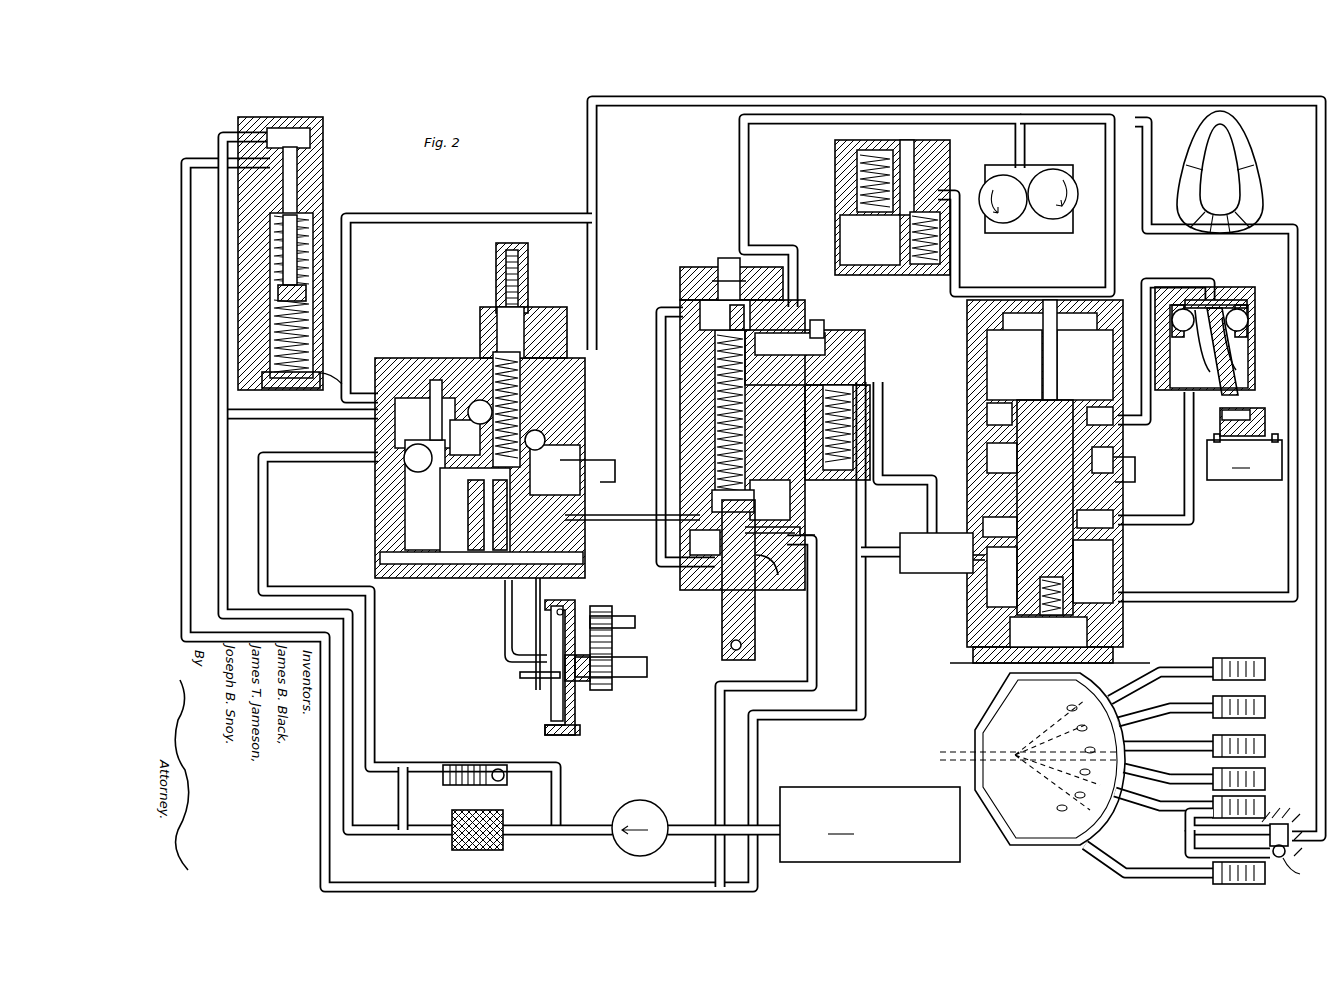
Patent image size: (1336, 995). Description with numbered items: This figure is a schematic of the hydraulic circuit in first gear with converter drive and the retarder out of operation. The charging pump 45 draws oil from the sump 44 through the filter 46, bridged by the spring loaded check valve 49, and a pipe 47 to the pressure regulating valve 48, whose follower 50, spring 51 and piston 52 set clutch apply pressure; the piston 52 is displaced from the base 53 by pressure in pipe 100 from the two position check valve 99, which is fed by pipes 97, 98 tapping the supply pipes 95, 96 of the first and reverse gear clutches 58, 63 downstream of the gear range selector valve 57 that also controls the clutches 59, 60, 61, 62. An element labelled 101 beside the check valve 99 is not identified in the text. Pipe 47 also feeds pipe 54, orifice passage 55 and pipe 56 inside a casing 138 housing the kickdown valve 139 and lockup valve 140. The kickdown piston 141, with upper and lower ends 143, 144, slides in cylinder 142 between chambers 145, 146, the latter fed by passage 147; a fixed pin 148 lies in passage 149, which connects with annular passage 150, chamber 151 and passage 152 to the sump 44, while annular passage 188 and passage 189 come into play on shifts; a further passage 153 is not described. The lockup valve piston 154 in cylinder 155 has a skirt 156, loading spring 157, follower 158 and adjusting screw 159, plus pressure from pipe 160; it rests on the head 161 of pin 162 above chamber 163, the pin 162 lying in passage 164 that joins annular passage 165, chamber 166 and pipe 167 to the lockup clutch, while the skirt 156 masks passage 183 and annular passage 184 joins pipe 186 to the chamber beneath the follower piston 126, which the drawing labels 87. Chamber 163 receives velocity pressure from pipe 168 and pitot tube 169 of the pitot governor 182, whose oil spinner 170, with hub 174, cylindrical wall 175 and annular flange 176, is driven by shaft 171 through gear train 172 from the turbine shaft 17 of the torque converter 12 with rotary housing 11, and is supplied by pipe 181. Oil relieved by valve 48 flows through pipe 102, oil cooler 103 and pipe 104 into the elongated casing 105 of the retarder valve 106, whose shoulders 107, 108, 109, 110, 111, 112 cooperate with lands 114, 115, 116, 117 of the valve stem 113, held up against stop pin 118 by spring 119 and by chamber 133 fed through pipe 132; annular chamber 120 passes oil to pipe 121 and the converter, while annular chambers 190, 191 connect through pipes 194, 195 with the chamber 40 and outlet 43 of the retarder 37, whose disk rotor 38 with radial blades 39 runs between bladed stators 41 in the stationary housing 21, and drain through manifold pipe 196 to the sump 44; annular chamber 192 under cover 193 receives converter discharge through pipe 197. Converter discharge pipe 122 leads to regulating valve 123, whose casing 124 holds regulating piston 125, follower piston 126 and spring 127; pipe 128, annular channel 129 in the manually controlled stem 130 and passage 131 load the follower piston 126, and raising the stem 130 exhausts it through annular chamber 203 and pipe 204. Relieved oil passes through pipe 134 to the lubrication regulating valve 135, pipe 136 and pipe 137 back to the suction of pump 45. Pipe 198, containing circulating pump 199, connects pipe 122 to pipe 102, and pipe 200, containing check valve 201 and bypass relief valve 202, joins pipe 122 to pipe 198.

The rotary housing 11 is at (491, 695).
The hydraulic torque converter 12 is at (1252, 155).
The turbine shaft 17 is at (635, 618).
The stationary housing 21 is at (1243, 402).
The retarder 37 is at (1232, 287).
The disk rotor 38 is at (1238, 380).
The radial blades 39 is at (1222, 358).
The chamber 40 is at (1193, 386).
The bladed stators 41 is at (1246, 316).
The outlet 43 is at (1236, 298).
The sump 44 is at (818, 530).
The charging pump 45 is at (650, 806).
The filter 46 is at (495, 850).
The pipe 47 is at (263, 510).
The pressure regulating valve 48 is at (310, 186).
The spring loaded check valve 49 is at (500, 782).
The follower 50 is at (283, 258).
The spring 51 is at (278, 302).
The piston 52 is at (262, 384).
The base 53 is at (320, 374).
The pipe 54 is at (285, 419).
The orifice passage 55 is at (372, 428).
The pipe 56 is at (232, 232).
The selector valve 57 is at (975, 735).
The first gear clutch 58 is at (1268, 806).
The second gear clutch 59 is at (1268, 779).
The third gear clutch 60 is at (1268, 745).
The fourth gear clutch 61 is at (1268, 704).
The fifth gear clutch 62 is at (1268, 664).
The reverse gear clutch 63 is at (1210, 880).
The valve 87 is at (733, 501).
The supply pipe 95 is at (1130, 808).
The supply pipe 96 is at (1100, 862).
The pipe 97 is at (1182, 828).
The pipe 98 is at (1183, 853).
The check valve 99 is at (1300, 872).
The pipe 100 is at (440, 212).
The relief valve 101 is at (1288, 853).
The pipe 102 is at (190, 156).
The oil cooler 103 is at (914, 574).
The pipe 104 is at (968, 574).
The elongated casing 105 is at (1120, 660).
The retarder valve 106 is at (1142, 556).
The annular shoulder 107 is at (1112, 618).
The annular shoulder 108 is at (1120, 574).
The annular shoulder 109 is at (1115, 538).
The annular shoulder 110 is at (1122, 503).
The annular shoulder 111 is at (1114, 442).
The annular shoulder 112 is at (985, 403).
The valve stem 113 is at (1062, 508).
The annular land 114 is at (1010, 615).
The annular land 115 is at (988, 519).
The annular land 116 is at (1000, 483).
The annular land 117 is at (1018, 395).
The stop pin 118 is at (1060, 378).
The spring 119 is at (995, 664).
The annular chamber 120 is at (1099, 570).
The pipe 121 is at (1215, 602).
The converter discharge pipe 122 is at (736, 212).
The regulating valve 123 is at (660, 252).
The casing 124 is at (700, 267).
The regulating piston 125 is at (700, 340).
The follower piston 126 is at (785, 490).
The spring 127 is at (663, 394).
The pipe 128 is at (661, 306).
The annular channel 129 is at (773, 574).
The manually controlled stem 130 is at (720, 628).
The passage 131 is at (660, 548).
The pipe 132 is at (806, 628).
The variable volume chamber 133 is at (1088, 640).
The pipe 134 is at (815, 325).
The pressure regulating valve 135 is at (868, 372).
The pipe 136 is at (850, 322).
The pipe 137 is at (884, 460).
The casing 138 is at (418, 358).
The kickdown valve 139 is at (410, 510).
The lockup valve 140 is at (560, 570).
The kickdown piston 141 is at (418, 533).
The cylinder 142 is at (380, 441).
The upper end 143 is at (474, 401).
The lower end 144 is at (440, 578).
The chamber 145 is at (467, 386).
The chamber 146 is at (445, 565).
The passage 147 is at (415, 562).
The fixed pin 148 is at (404, 386).
The passage 149 is at (624, 540).
The annular passage 150 is at (410, 492).
The chamber 151 is at (575, 552).
The passage 152 is at (600, 521).
The passage 153 is at (398, 408).
The lockup valve piston 154 is at (570, 440).
The cylinder 155 is at (580, 370).
The skirt 156 is at (580, 386).
The loading spring 157 is at (492, 355).
The follower 158 is at (480, 330).
The adjusting screw 159 is at (495, 268).
The pipe 160 is at (586, 243).
The head 161 is at (520, 578).
The pin 162 is at (538, 576).
The chamber 163 is at (500, 578).
The passage 164 is at (592, 492).
The annular passage 165 is at (585, 478).
The chamber 166 is at (575, 450).
The pipe 167 is at (615, 455).
The pipe 168 is at (505, 640).
The pitot tube 169 is at (577, 602).
The oil spinner 170 is at (580, 726).
The shaft 171 is at (634, 677).
The gear train 172 is at (612, 650).
The hub 174 is at (580, 682).
The peripheral cylindrical wall 175 is at (567, 745).
The annular flange 176 is at (545, 720).
The pipe 181 is at (540, 680).
The pitot governor 182 is at (528, 655).
The passage 183 is at (442, 425).
The annular passage 184 is at (485, 578).
The pipe 186 is at (647, 540).
The annular passage 188 is at (405, 478).
The passage 189 is at (468, 578).
The annular chamber 190 is at (1101, 528).
The annular chamber 191 is at (1105, 423).
The annular chamber 192 is at (1095, 336).
The cover 193 is at (1097, 318).
The pipe 194 is at (1196, 512).
The pipe 195 is at (1170, 280).
The manifold pipe 196 is at (1136, 468).
The pipe 197 is at (1104, 244).
The pipe 198 is at (1036, 278).
The circulating pump 199 is at (1050, 172).
The pipe 200 is at (789, 172).
The check valve 201 is at (856, 178).
The relief valve 202 is at (912, 258).
The annular chamber 203 is at (785, 500).
The pipe 204 is at (802, 512).